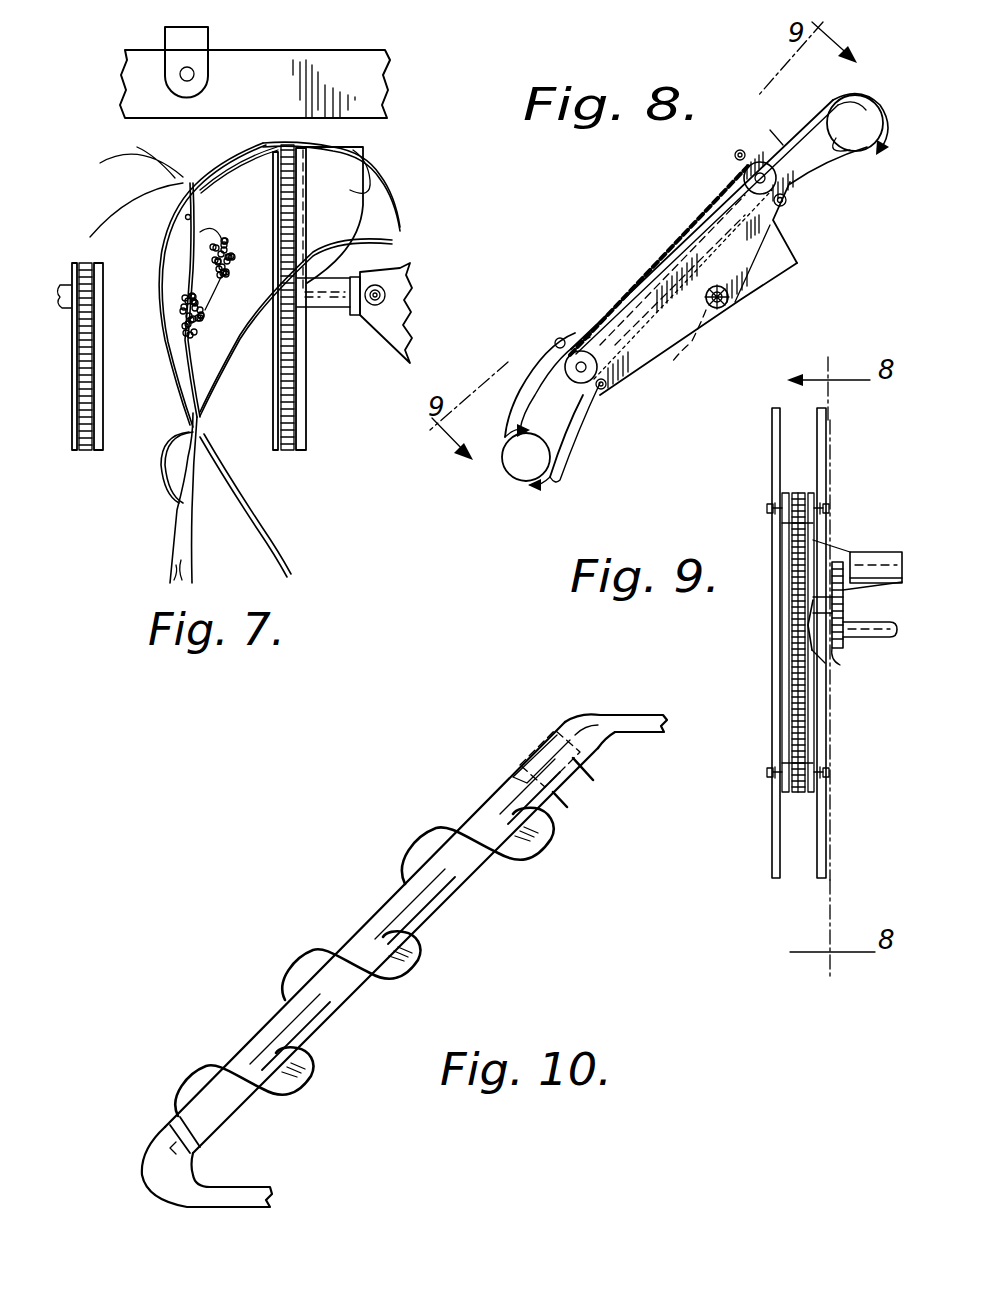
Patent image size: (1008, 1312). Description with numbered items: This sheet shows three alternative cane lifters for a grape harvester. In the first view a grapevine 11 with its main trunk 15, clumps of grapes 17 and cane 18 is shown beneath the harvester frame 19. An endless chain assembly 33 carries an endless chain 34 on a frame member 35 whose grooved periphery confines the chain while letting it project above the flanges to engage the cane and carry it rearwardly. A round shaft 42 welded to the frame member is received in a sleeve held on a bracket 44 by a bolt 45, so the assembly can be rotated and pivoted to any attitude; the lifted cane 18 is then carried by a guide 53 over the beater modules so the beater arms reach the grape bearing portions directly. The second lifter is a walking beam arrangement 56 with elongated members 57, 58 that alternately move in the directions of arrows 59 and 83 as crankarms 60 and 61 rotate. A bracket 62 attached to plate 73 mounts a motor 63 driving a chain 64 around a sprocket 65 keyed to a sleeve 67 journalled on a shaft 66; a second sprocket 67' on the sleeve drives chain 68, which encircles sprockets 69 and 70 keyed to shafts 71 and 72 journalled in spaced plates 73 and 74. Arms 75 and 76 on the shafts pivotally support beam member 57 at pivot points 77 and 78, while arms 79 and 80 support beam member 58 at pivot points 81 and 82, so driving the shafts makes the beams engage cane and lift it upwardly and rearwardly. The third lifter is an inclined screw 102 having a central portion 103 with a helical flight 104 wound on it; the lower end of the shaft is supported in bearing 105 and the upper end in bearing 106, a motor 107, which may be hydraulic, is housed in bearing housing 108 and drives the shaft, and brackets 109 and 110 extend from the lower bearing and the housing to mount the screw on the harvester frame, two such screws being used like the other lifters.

In FIG. 7, the grapevine 11 is at (177, 552).
In FIG. 7, the main trunk 15 is at (162, 482).
In FIG. 7, the clumps of grapes 17 is at (202, 325).
In FIG. 7, the cane 18 is at (373, 163).
In FIG. 7, the frame 19 is at (346, 50).
In FIG. 7, the endless chain assembly 33 is at (100, 323).
In FIG. 7, the endless chain 34 is at (300, 433).
In FIG. 7, the frame member 35 is at (275, 388).
In FIG. 7, the shaft 42 is at (322, 297).
In FIG. 7, the bracket 44 is at (397, 312).
In FIG. 7, the bolt 45 is at (358, 278).
In FIG. 7, the guide 53 is at (353, 188).
In FIG. 8, the walking beam arrangement 56 is at (598, 277).
In FIG. 9, the walking beam arrangement 56 is at (762, 621).
In FIG. 8, the elongated beam member 57 is at (637, 262).
In FIG. 9, the elongated beam member 57 is at (828, 720).
In FIG. 8, the walking beam member 58 is at (620, 378).
In FIG. 9, the walking beam member 58 is at (775, 817).
In FIG. 8, the arrow 59 is at (857, 95).
In FIG. 8, the crankarm 60 is at (562, 373).
In FIG. 8, the crankarm 61 is at (772, 170).
In FIG. 8, the bracket 62 is at (782, 244).
In FIG. 9, the bracket 62 is at (828, 543).
In FIG. 9, the motor 63 is at (870, 562).
In FIG. 9, the chain 64 is at (847, 602).
In FIG. 9, the sprocket 65 is at (835, 650).
In FIG. 8, the shaft 66 is at (730, 303).
In FIG. 9, the shaft 66 is at (880, 637).
In FIG. 8, the sleeve 67 is at (733, 336).
In FIG. 9, the sleeve 67 is at (772, 616).
In FIG. 8, the sprocket 67' is at (702, 365).
In FIG. 9, the sprocket 67' is at (863, 688).
In FIG. 8, the chain 68 is at (672, 318).
In FIG. 9, the chain 68 is at (798, 530).
In FIG. 8, the sprocket 69 is at (662, 335).
In FIG. 8, the sprocket 70 is at (740, 185).
In FIG. 8, the shaft 71 is at (578, 415).
In FIG. 8, the shaft 72 is at (740, 162).
In FIG. 9, the plate 73 is at (812, 690).
In FIG. 9, the plate 74 is at (787, 672).
In FIG. 8, the arm 75 is at (581, 350).
In FIG. 9, the arm 75 is at (820, 778).
In FIG. 8, the arm 76 is at (775, 132).
In FIG. 9, the arm 76 is at (823, 505).
In FIG. 8, the pivot point 77 is at (555, 342).
In FIG. 9, the pivot point 77 is at (830, 773).
In FIG. 8, the pivot point 78 is at (735, 152).
In FIG. 9, the pivot point 78 is at (830, 508).
In FIG. 8, the arm 79 is at (590, 398).
In FIG. 9, the arm 79 is at (780, 765).
In FIG. 8, the arm 80 is at (785, 197).
In FIG. 9, the arm 80 is at (775, 508).
In FIG. 8, the pivot point 81 is at (608, 386).
In FIG. 9, the pivot point 81 is at (770, 773).
In FIG. 8, the pivot point 82 is at (790, 205).
In FIG. 9, the pivot point 82 is at (767, 510).
In FIG. 8, the arrow 83 is at (882, 130).
In FIG. 10, the inclined screw 102 is at (342, 903).
In FIG. 10, the central portion 103 is at (470, 872).
In FIG. 10, the helical flight 104 is at (307, 1088).
In FIG. 10, the bearing 105 is at (165, 1140).
In FIG. 10, the bearing 106 is at (513, 773).
In FIG. 10, the motor 107 is at (535, 740).
In FIG. 10, the bearing housing 108 is at (566, 723).
In FIG. 10, the bracket 109 is at (230, 1200).
In FIG. 10, the bracket 110 is at (648, 716).